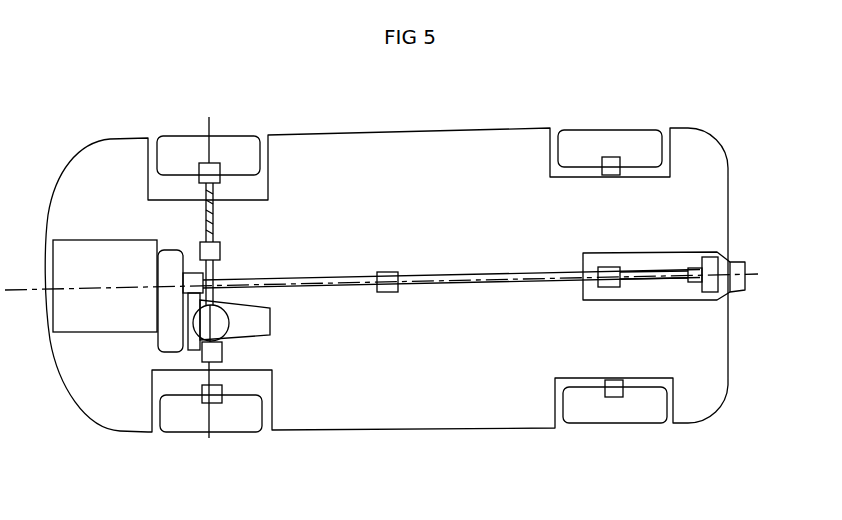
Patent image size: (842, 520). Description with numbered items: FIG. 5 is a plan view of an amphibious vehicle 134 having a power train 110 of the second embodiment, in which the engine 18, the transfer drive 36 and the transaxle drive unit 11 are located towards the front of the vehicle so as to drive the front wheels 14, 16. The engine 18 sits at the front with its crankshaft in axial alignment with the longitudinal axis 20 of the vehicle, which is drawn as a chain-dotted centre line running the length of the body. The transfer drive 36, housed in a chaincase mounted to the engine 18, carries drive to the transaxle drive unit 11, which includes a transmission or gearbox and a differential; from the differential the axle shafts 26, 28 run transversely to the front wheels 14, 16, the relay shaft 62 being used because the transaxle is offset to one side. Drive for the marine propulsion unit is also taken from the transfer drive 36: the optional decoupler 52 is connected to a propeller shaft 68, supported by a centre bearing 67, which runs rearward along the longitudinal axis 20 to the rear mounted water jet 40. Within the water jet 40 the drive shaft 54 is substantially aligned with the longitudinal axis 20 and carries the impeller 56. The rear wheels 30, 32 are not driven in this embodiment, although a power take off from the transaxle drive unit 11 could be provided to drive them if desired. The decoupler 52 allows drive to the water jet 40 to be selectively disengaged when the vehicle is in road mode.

The power train 110 is at (97, 228).
The front wheel 14 is at (182, 147).
The front wheel 16 is at (193, 423).
The rear wheel 30 is at (583, 148).
The rear wheel 32 is at (630, 403).
The engine 18 is at (120, 279).
The transfer drive 36 is at (167, 245).
The longitudinal axis 20 is at (138, 287).
The decoupler 52 is at (197, 277).
The axle shaft 28 is at (212, 203).
The relay shaft 62 is at (218, 272).
The propeller shaft 68 is at (328, 278).
The centre bearing 67 is at (387, 272).
The amphibious vehicle 134 is at (447, 236).
The transaxle drive unit 11 is at (280, 335).
The axle shaft 26 is at (213, 368).
The water jet 40 is at (732, 237).
The impeller 56 is at (710, 263).
The drive shaft 54 is at (670, 278).